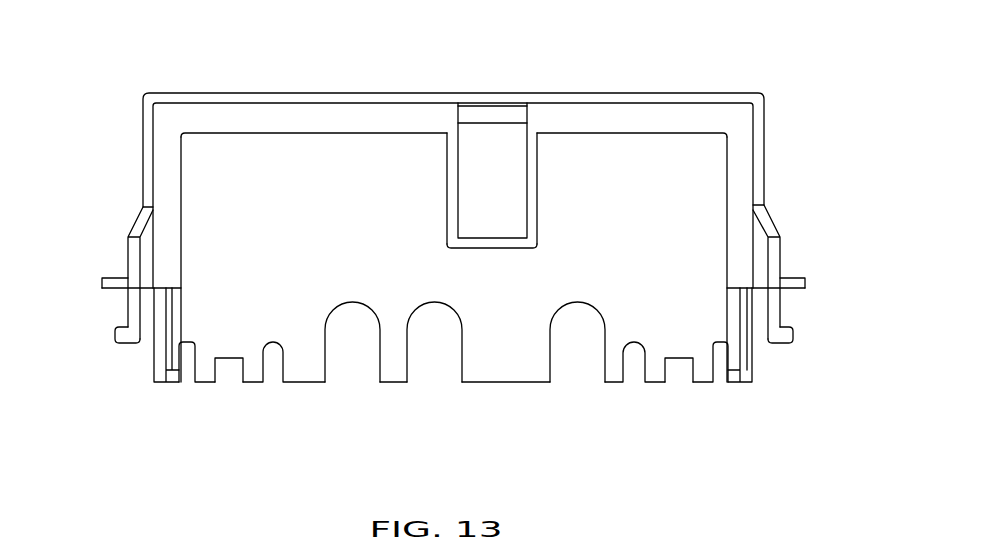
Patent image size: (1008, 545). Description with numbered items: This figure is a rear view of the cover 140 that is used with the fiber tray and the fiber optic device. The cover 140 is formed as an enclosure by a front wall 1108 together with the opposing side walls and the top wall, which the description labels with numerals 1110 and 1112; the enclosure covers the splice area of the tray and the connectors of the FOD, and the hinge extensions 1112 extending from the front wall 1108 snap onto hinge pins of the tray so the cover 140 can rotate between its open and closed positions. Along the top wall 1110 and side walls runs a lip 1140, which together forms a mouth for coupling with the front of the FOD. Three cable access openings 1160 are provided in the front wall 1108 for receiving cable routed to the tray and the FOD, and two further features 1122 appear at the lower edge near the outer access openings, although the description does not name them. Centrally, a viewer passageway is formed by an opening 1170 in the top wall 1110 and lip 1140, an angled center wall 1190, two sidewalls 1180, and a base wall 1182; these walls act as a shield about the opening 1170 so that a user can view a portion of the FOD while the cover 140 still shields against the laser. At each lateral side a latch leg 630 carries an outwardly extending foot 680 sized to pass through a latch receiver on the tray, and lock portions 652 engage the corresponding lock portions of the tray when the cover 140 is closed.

The cover 140 is at (767, 79).
The lip 1140 is at (230, 93).
The top wall 1110 is at (286, 133).
The hinge extensions 1112 is at (181, 224).
The front wall 1108 is at (346, 255).
The sidewalls of viewer 1180 is at (455, 193).
The base wall 1182 is at (492, 247).
The angled center wall 1190 is at (466, 196).
The opening 1170 is at (491, 115).
The lock portions 652 is at (105, 278).
The latch leg 630 is at (130, 302).
The feet 680 is at (128, 342).
The bottom notches 1122 is at (225, 378).
The access openings 1160 is at (350, 363).